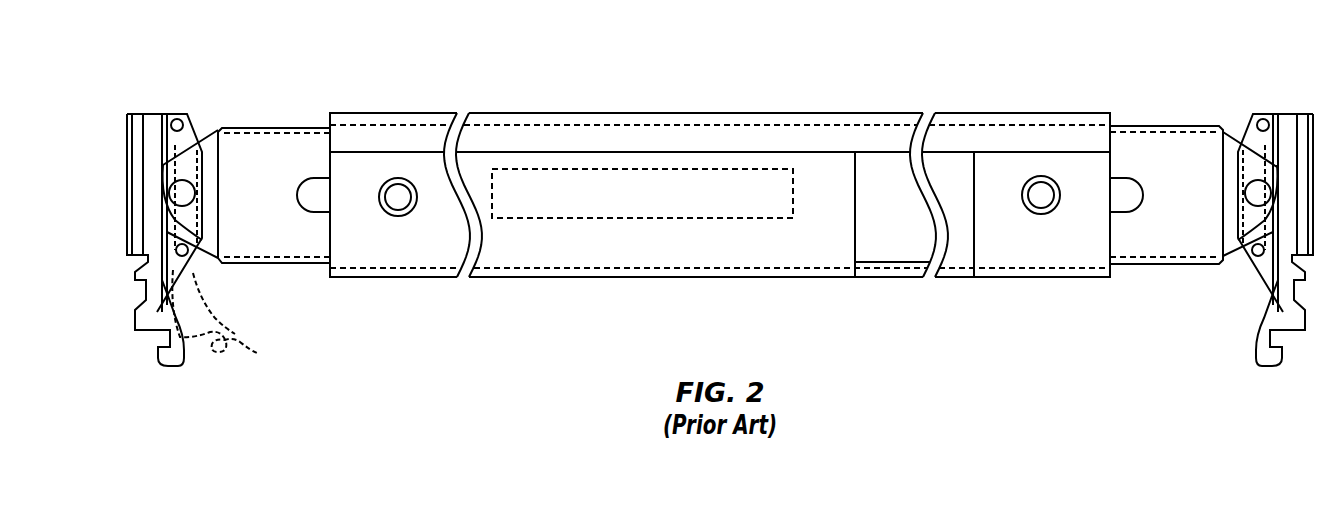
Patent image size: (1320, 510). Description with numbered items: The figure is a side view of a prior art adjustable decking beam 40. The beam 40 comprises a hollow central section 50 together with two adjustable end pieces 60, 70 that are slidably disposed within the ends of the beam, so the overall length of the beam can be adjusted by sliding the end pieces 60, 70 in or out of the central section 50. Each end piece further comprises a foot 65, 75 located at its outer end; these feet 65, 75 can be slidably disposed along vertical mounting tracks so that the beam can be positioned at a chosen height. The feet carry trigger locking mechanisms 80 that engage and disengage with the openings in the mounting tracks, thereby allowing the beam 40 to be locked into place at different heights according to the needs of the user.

The beam 40 is at (858, 96).
The central section 50 is at (825, 178).
The adjustable end piece 60 is at (260, 145).
The adjustable end piece 70 is at (1137, 145).
The foot 65 is at (151, 103).
The foot 75 is at (1268, 103).
The trigger locking mechanism 80 is at (258, 350).